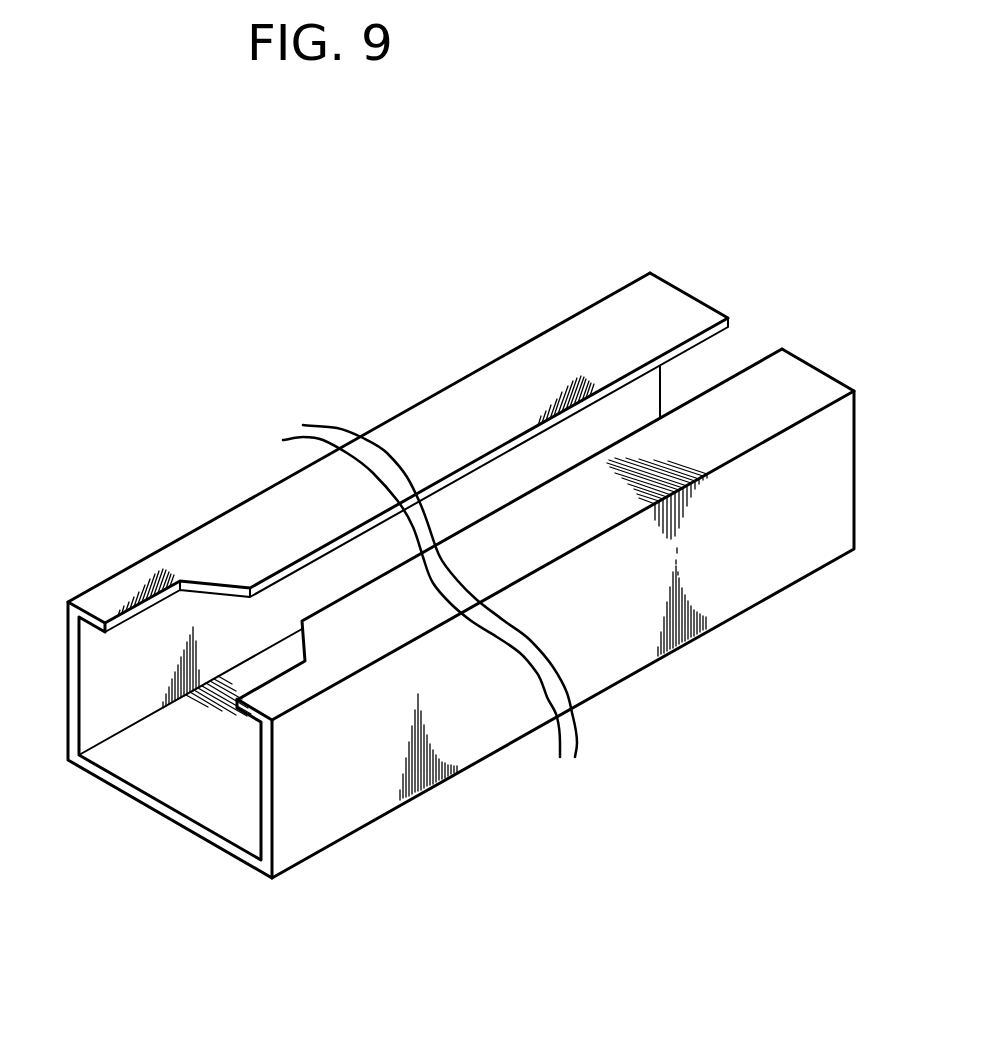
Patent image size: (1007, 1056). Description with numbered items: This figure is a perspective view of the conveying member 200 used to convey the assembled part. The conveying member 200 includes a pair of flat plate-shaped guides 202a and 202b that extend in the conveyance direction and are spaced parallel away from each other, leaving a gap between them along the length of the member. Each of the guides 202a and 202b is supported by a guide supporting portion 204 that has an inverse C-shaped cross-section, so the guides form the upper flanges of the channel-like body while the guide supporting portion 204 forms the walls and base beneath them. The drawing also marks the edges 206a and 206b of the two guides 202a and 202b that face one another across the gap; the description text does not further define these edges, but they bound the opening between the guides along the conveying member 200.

The conveying member 200 is at (695, 682).
The guide 202a is at (613, 306).
The guide 202b is at (806, 386).
The guide supporting portion 204 is at (300, 835).
The edge of first top plate 206a is at (731, 322).
The edge of second top plate 206b is at (779, 348).